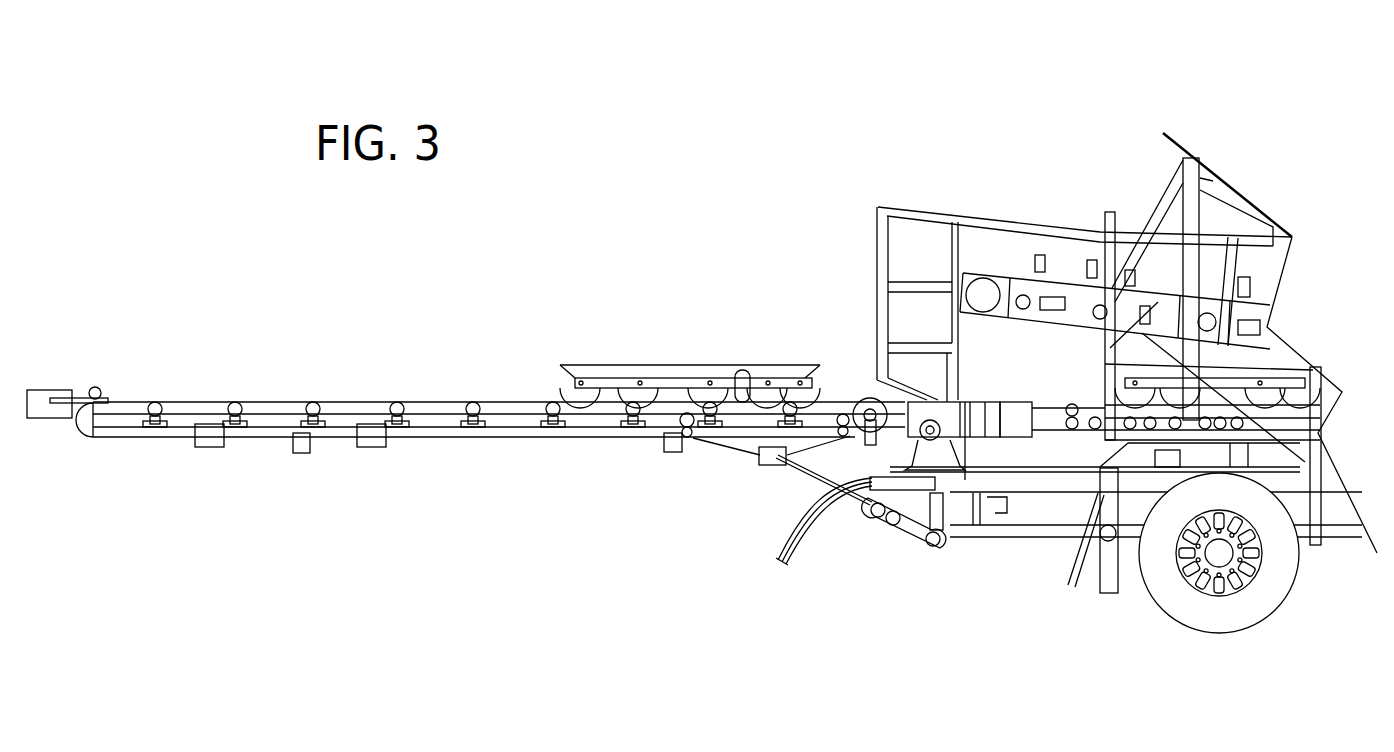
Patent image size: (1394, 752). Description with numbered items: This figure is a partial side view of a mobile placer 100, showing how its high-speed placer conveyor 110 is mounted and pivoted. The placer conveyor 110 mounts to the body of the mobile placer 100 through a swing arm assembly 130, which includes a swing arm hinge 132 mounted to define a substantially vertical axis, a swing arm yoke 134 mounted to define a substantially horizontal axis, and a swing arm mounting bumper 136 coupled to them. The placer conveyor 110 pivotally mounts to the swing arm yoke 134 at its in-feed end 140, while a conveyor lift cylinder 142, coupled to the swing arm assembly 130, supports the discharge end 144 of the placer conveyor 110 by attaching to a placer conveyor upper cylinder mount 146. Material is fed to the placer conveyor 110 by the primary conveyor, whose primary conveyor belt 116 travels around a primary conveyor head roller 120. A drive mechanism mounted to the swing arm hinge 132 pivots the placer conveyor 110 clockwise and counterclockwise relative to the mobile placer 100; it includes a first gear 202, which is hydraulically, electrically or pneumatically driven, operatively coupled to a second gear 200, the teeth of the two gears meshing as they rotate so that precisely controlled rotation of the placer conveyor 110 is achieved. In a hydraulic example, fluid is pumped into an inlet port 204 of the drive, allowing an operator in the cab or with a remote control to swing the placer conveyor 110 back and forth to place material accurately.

The mobile placer 100 is at (1132, 102).
The placer conveyor 110 is at (412, 358).
The primary conveyor belt 116 is at (1063, 258).
The primary conveyor head roller 120 is at (975, 295).
The swing arm assembly 130 is at (1010, 535).
The swing arm hinge 132 is at (943, 513).
The swing arm yoke 134 is at (935, 405).
The swing arm mounting bumper 136 is at (1113, 593).
The in-feed end 140 is at (850, 402).
The conveyor lift cylinder 142 is at (790, 488).
The discharge end 144 is at (200, 400).
The placer conveyor upper cylinder mount 146 is at (705, 446).
The second gear 200 is at (978, 402).
The first gear 202 is at (878, 512).
The inlet port 204 is at (775, 545).